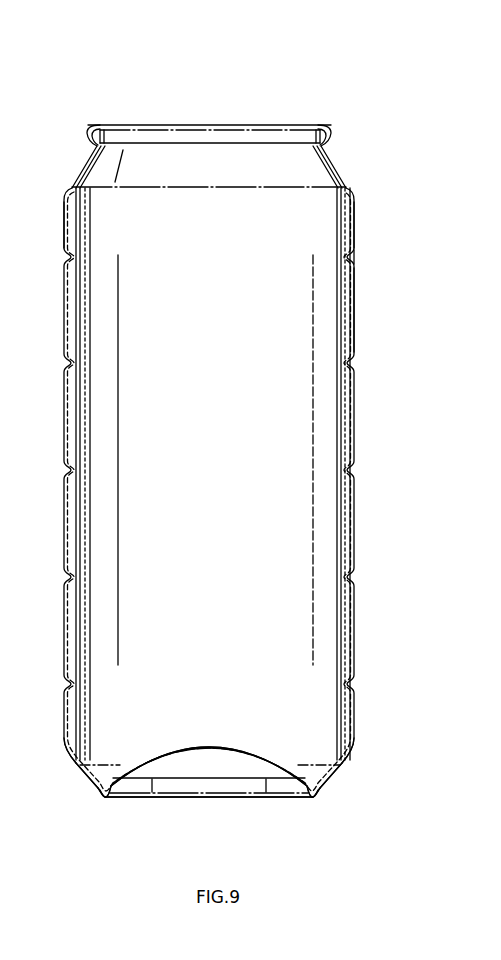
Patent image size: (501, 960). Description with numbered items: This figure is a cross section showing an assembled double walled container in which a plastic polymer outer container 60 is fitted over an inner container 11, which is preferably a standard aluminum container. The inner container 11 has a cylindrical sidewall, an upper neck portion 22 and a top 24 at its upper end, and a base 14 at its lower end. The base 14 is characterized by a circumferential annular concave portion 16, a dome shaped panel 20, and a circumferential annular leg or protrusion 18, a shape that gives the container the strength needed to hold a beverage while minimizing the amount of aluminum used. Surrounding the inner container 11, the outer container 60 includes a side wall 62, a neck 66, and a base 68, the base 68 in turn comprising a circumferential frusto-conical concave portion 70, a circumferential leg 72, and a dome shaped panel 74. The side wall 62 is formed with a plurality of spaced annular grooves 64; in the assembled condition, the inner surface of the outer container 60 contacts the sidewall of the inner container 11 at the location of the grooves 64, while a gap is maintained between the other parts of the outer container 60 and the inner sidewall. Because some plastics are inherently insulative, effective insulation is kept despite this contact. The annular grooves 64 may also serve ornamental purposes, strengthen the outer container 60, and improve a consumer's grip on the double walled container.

The inner container 11 is at (386, 149).
The base 14 is at (232, 710).
The annular concave portion 16 is at (96, 768).
The annular leg 18 is at (105, 783).
The dome shaped panel 20 is at (173, 744).
The upper neck portion 22 is at (337, 153).
The top 24 is at (212, 98).
The outer container 60 is at (414, 486).
The side wall 62 is at (356, 311).
The annular grooves 64 is at (350, 257).
The neck 66 is at (76, 190).
The base 68 is at (265, 827).
The frusto-conical concave portion 70 is at (76, 770).
The circumferential leg 72 is at (104, 800).
The dome shaped panel 74 is at (207, 755).